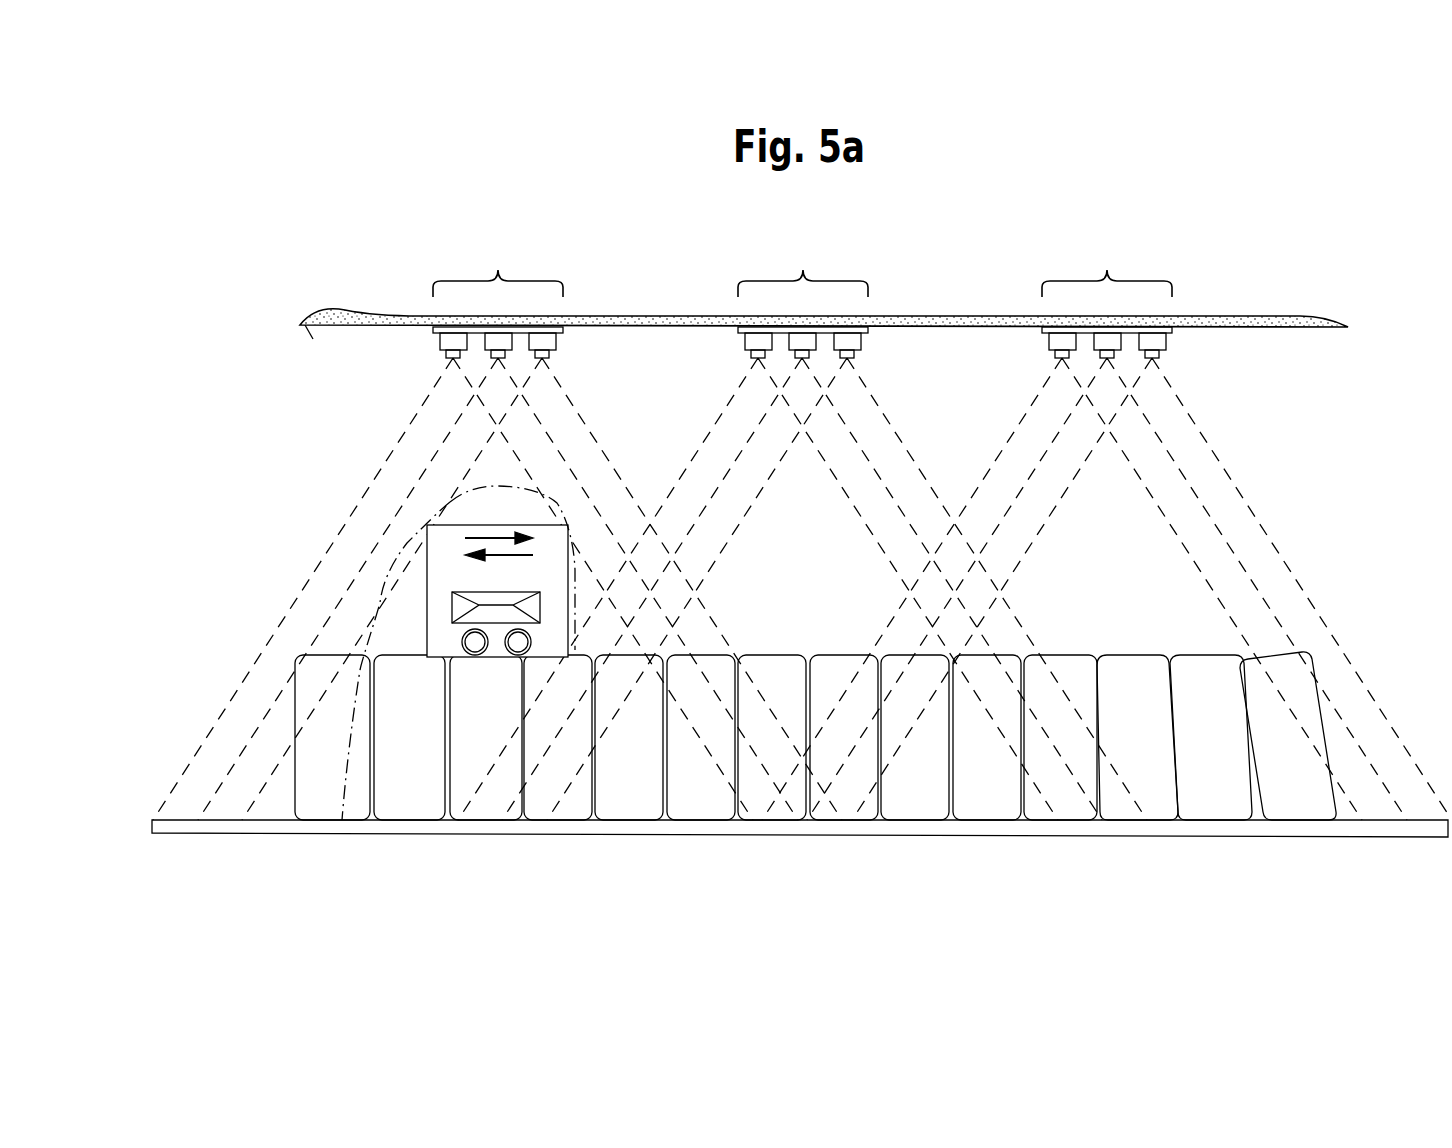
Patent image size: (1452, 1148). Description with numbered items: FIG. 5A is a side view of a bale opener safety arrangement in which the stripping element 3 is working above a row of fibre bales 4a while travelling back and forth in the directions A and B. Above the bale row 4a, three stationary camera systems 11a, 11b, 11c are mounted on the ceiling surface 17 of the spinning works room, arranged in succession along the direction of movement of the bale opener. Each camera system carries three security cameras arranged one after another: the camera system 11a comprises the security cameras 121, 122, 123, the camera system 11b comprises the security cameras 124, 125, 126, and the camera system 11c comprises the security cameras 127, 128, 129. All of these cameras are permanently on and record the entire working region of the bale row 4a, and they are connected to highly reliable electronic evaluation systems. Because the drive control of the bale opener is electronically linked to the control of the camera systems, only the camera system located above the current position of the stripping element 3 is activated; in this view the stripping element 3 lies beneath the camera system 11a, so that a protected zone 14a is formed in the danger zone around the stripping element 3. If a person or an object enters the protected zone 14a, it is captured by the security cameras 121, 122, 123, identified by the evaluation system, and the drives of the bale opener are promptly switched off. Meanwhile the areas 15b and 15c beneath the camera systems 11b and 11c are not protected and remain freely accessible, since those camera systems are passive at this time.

The ceiling surface 17 is at (300, 325).
The camera system 11a is at (498, 283).
The camera system 11b is at (803, 283).
The camera system 11c is at (1107, 283).
The security camera 121 is at (442, 340).
The security camera 122 is at (493, 343).
The security camera 123 is at (550, 343).
The security camera 124 is at (748, 343).
The security camera 125 is at (800, 343).
The security camera 126 is at (853, 343).
The security camera 127 is at (1053, 343).
The security camera 128 is at (1115, 347).
The security camera 129 is at (1157, 343).
The stripping element 3 is at (443, 545).
The direction of movement A is at (474, 536).
The direction of movement B is at (510, 558).
The protected zone 14a is at (393, 637).
The bale row 4a is at (308, 680).
The area 15b is at (802, 589).
The area 15c is at (1105, 589).